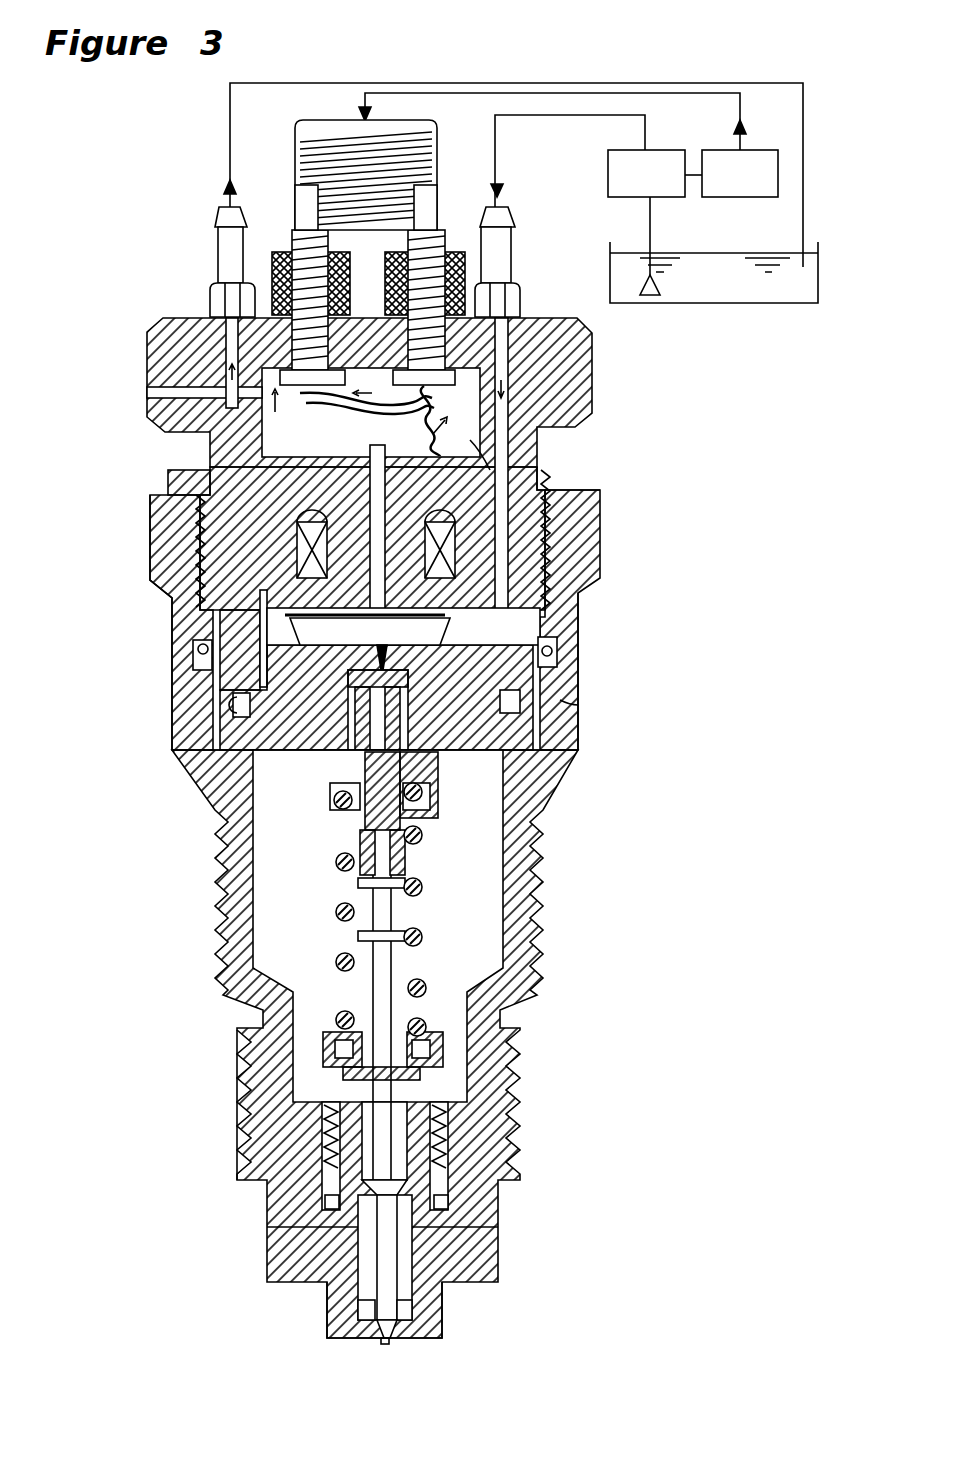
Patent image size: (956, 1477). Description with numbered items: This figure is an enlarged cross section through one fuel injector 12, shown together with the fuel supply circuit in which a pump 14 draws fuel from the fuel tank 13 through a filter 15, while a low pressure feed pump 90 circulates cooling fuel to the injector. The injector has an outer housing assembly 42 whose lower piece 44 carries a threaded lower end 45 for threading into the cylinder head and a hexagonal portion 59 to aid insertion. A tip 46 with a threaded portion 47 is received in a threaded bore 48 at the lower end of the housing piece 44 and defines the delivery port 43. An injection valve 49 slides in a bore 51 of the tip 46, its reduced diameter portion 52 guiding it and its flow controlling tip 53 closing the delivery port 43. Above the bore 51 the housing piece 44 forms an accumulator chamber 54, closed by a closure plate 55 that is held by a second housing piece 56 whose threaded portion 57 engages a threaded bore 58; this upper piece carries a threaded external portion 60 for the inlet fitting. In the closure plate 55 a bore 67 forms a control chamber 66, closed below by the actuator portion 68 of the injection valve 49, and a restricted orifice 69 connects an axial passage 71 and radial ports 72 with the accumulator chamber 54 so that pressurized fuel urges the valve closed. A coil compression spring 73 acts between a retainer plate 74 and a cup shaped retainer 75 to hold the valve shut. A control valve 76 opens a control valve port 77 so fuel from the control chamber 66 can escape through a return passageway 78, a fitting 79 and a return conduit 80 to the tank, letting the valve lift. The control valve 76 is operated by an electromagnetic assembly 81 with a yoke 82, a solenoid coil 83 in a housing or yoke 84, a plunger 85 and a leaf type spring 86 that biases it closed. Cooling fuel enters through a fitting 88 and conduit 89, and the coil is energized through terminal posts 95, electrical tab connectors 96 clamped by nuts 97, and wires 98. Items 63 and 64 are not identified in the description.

The fuel injector 12 is at (401, 759).
The fuel tank 13 is at (795, 288).
The pump 14 is at (778, 168).
The filter 15 is at (660, 292).
The outer housing assembly 42 is at (590, 660).
The delivery port 43 is at (375, 1340).
The lower housing piece 44 is at (182, 733).
The threaded lower end 45 is at (237, 1130).
The tip 46 is at (330, 1325).
The threaded portion 47 is at (265, 1185).
The threaded bore 48 is at (320, 1120).
The injection valve 49 is at (408, 1008).
The bore 51 is at (405, 1245).
The reduced diameter portion 52 is at (398, 1210).
The flow controlling tip 53 is at (392, 1338).
The accumulator chamber 54 is at (445, 882).
The closure plate 55 is at (585, 752).
The second housing piece 56 is at (597, 410).
The threaded portion 57 is at (448, 618).
The threaded bore 58 is at (546, 548).
The hexagonal portion 59 is at (560, 520).
The threaded external portion 60 is at (298, 150).
The spring chamber 63 is at (235, 700).
The valve body 64 is at (560, 735).
The control chamber 66 is at (578, 700).
The bore 67 is at (440, 752).
The actuator portion 68 is at (538, 790).
The restricted orifice 69 is at (320, 748).
The axial passage 71 is at (340, 810).
The radial ports 72 is at (430, 790).
The coil compression spring 73 is at (335, 910).
The retainer plate 74 is at (335, 796).
The cup shaped retainer 75 is at (445, 1050).
The control valve 76 is at (558, 648).
The control valve port 77 is at (197, 658).
The return passageway 78 is at (205, 352).
The fitting 79 is at (218, 240).
The return conduit 80 is at (228, 138).
The electromagnetic assembly 81 is at (158, 563).
The yoke 82 is at (200, 607).
The solenoid coil 83 is at (165, 490).
The housing or yoke 84 is at (180, 472).
The plunger 85 is at (512, 488).
The leaf type spring 86 is at (370, 432).
The fitting 88 is at (510, 240).
The conduit 89 is at (545, 428).
The low pressure feed pump 90 is at (610, 170).
The terminal posts 95 is at (296, 245).
The electrical tab connectors 96 is at (225, 280).
The nuts 97 is at (278, 275).
The wires 98 is at (440, 458).